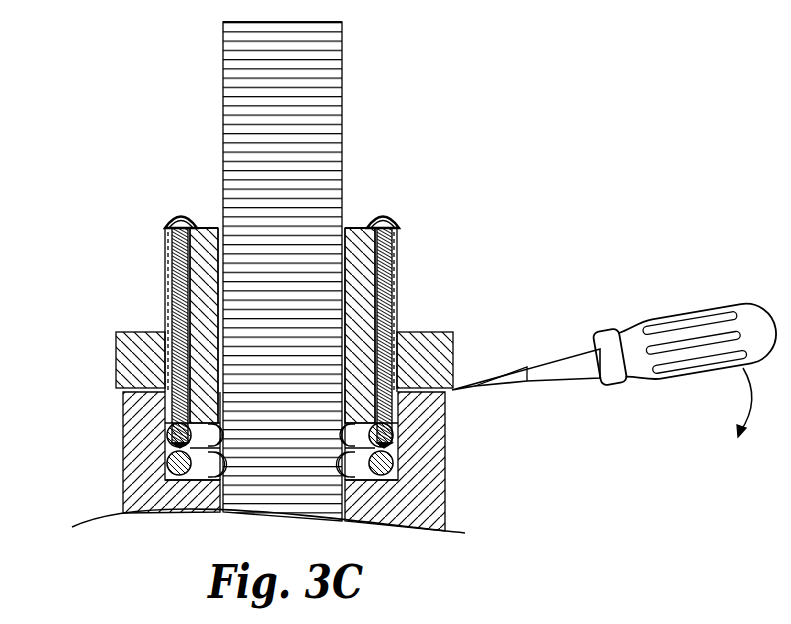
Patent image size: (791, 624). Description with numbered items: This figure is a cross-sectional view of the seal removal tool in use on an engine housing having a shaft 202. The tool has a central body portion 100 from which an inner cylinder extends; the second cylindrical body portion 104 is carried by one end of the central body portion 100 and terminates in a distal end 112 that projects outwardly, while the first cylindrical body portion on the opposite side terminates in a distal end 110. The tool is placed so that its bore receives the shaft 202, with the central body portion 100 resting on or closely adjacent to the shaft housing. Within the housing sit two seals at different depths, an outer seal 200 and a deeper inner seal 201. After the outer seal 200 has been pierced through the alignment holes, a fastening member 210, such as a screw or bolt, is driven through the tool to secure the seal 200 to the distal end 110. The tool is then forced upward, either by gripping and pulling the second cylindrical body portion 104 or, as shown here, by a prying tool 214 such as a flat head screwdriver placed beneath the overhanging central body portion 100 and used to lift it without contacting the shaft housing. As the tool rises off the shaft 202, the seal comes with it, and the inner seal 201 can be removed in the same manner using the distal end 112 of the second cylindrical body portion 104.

The central body portion 100 is at (116, 367).
The second cylindrical body portion 104 is at (171, 265).
The distal end of the first cylindrical body portion 110 is at (170, 465).
The distal end of the second cylindrical body portion 112 is at (210, 228).
The outer seal 200 is at (358, 424).
The inner seal 201 is at (357, 477).
The shaft 202 is at (223, 100).
The fastening member 210 is at (394, 231).
The prying tool 214 is at (678, 317).